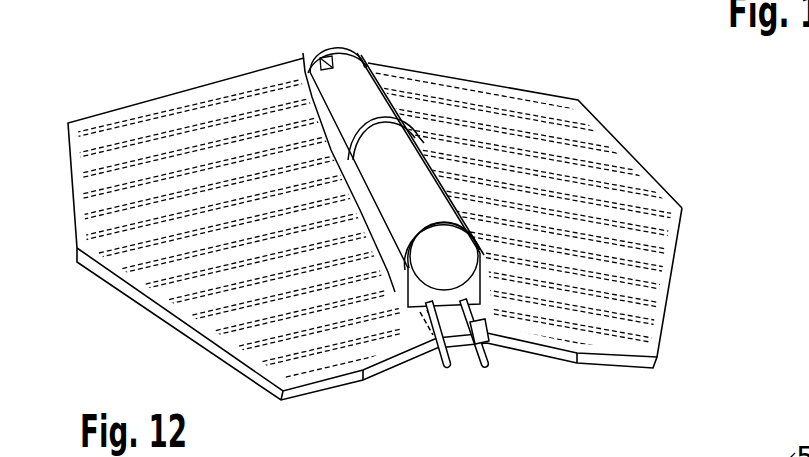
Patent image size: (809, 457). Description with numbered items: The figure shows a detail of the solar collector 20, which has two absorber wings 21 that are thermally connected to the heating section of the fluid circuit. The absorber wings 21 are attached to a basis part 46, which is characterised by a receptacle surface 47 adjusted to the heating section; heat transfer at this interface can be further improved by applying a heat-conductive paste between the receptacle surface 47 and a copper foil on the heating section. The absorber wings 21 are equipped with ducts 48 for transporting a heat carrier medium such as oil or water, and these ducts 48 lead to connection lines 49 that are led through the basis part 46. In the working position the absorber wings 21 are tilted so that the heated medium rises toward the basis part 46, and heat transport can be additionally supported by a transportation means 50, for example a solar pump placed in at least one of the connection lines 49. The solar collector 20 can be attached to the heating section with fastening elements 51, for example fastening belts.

The solar collector 20 is at (437, 70).
The absorber wings 21 is at (375, 153).
The basis part 46 is at (365, 226).
The receptacle surface 47 is at (336, 84).
The ducts 48 is at (137, 118).
The connection lines 49 is at (437, 364).
The transportation means 50 is at (492, 334).
The fastening elements 51 is at (354, 50).